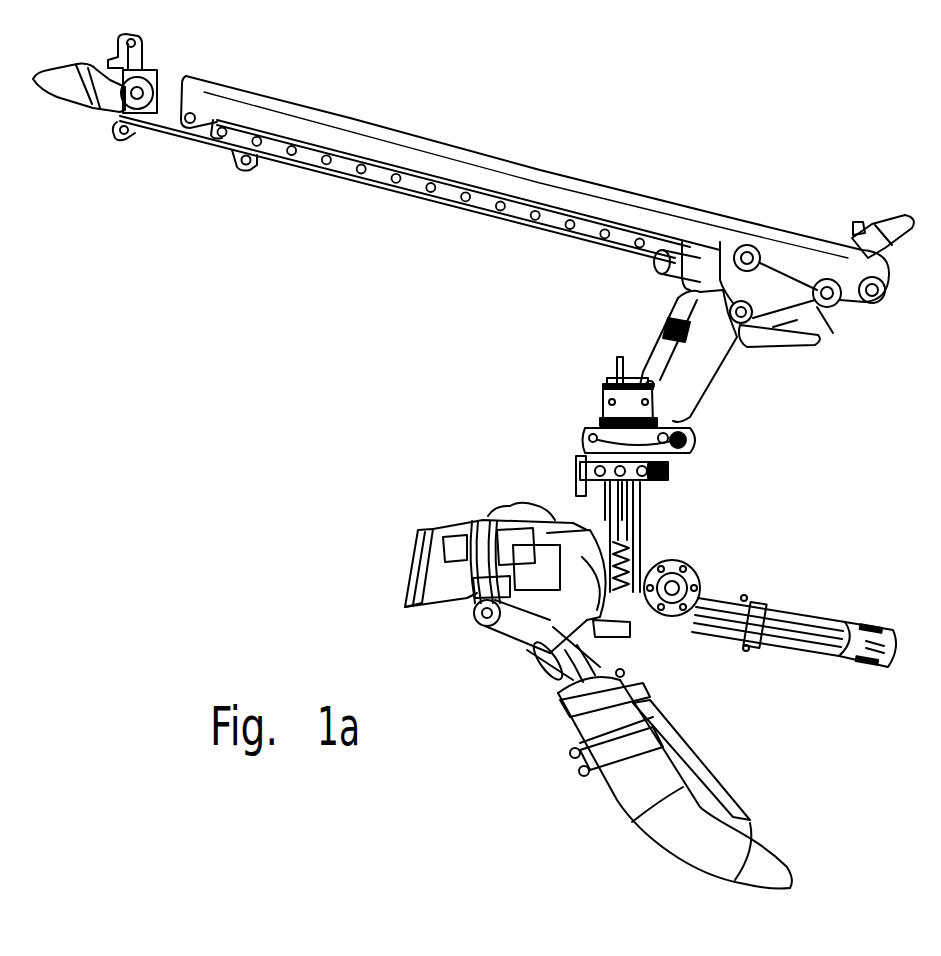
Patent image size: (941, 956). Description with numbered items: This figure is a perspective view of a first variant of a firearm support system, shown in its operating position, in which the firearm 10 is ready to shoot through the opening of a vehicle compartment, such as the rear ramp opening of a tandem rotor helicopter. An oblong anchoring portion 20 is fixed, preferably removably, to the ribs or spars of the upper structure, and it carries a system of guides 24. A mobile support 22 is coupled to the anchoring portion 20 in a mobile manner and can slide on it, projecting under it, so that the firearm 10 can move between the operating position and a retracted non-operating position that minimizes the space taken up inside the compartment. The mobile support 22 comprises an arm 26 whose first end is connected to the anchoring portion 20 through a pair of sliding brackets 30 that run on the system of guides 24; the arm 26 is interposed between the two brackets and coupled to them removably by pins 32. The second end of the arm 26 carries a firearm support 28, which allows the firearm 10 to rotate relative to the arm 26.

The firearm 10 is at (808, 605).
The anchoring portion 20 is at (669, 199).
The mobile support 22 is at (603, 413).
The system of guides 24 is at (485, 205).
The arm 26 is at (705, 357).
The firearm support 28 is at (675, 480).
The sliding bracket 30 is at (777, 283).
The pins 32 is at (753, 320).